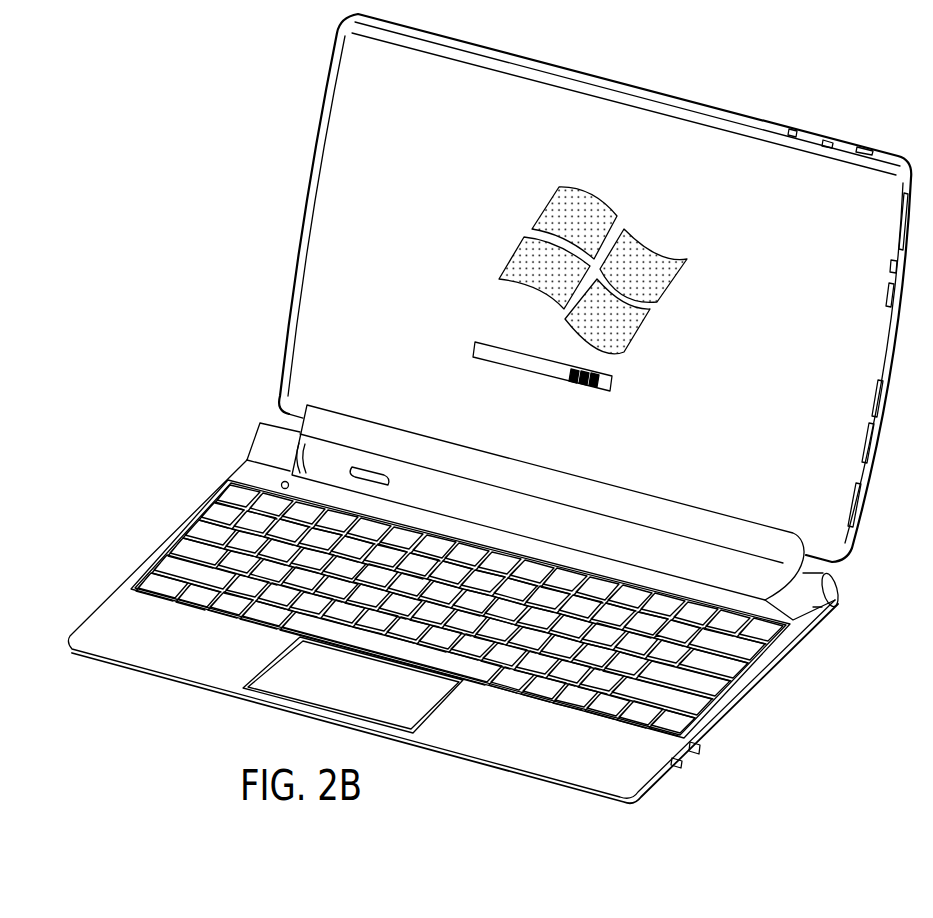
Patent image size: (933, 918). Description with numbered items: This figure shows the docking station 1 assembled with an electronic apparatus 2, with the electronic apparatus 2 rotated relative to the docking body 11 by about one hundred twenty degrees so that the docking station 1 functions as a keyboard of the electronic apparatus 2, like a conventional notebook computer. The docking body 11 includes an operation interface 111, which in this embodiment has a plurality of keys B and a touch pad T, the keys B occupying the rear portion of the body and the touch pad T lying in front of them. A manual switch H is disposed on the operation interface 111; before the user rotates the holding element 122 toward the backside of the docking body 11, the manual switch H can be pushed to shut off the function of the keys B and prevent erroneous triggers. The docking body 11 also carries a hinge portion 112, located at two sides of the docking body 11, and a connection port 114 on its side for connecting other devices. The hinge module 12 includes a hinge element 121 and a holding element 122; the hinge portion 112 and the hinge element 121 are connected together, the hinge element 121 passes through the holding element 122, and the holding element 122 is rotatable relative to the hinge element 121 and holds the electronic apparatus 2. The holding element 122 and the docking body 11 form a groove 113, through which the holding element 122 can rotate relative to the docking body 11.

The docking station 1 is at (137, 469).
The electronic apparatus 2 is at (303, 213).
The docking body 11 is at (453, 638).
The operation interface 111 is at (175, 556).
The hinge portion 112 is at (261, 443).
The groove 113 is at (328, 484).
The connection port 114 is at (680, 757).
The hinge module 12 is at (886, 623).
The hinge element 121 is at (832, 594).
The holding element 122 is at (793, 623).
The manual switch H is at (280, 481).
The touch pad T is at (410, 708).
The keys B is at (700, 680).